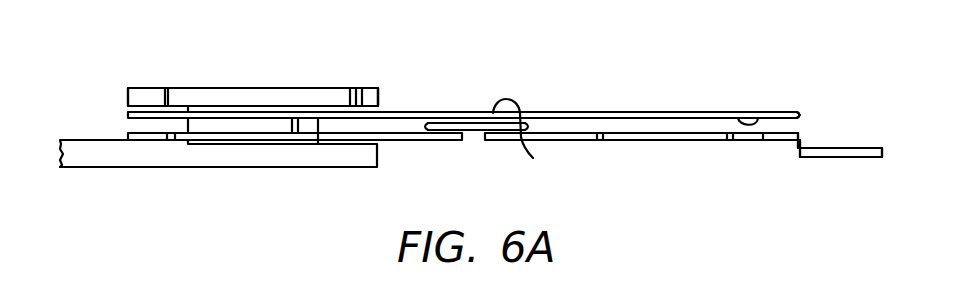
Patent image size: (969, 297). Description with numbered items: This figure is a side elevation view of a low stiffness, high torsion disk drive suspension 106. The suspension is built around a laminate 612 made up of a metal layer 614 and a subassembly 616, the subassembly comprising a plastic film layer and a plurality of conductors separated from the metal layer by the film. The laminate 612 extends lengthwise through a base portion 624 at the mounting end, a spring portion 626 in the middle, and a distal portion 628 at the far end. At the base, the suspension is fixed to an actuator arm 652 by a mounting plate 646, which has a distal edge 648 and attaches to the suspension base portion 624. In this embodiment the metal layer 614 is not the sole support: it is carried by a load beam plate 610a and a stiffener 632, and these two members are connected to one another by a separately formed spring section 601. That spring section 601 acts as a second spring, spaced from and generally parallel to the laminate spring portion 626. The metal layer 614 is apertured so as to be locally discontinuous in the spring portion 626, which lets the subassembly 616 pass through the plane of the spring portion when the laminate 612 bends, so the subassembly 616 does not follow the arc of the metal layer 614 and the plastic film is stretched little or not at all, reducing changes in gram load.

The disk drive suspension 106 is at (95, 97).
The actuator arm 652 is at (83, 153).
The base portion 624 is at (217, 110).
The mounting plate 646 is at (300, 86).
The distal edge 648 is at (382, 92).
The laminate 612 is at (540, 110).
The subassembly 616 is at (695, 103).
The load beam plate 610a is at (442, 141).
The spring section 601 is at (452, 128).
The spring portion 626 is at (533, 158).
The metal layer 614 is at (738, 112).
The distal portion 628 is at (787, 112).
The stiffener 632 is at (725, 141).